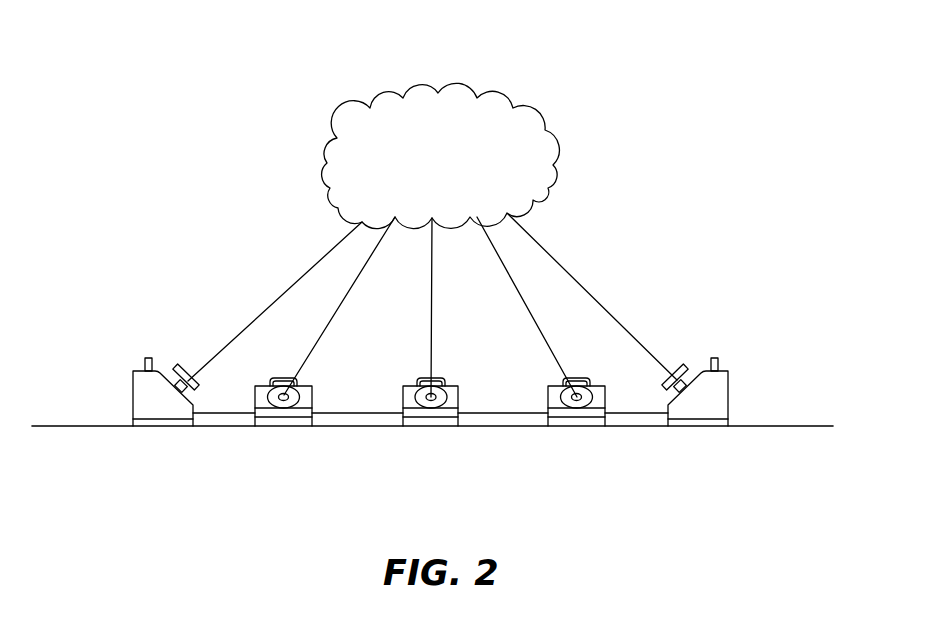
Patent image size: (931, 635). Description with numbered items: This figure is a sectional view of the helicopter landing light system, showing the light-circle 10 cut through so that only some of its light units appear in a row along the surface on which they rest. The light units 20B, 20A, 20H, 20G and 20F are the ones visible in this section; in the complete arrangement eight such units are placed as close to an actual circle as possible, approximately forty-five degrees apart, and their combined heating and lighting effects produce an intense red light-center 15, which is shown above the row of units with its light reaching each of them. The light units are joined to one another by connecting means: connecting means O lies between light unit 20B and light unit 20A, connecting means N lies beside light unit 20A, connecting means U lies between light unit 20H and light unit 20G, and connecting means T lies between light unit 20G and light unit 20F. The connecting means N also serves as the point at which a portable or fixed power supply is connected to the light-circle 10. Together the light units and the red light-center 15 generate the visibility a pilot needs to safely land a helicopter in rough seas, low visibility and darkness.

The light-circle 10 is at (235, 306).
The red light-center 15 is at (563, 89).
The light unit 20B is at (168, 377).
The light unit 20A is at (310, 385).
The light unit 20H is at (452, 388).
The light unit 20G is at (602, 388).
The light unit 20F is at (722, 383).
The connecting means N is at (327, 408).
The connecting means O is at (227, 413).
The connecting means U is at (510, 413).
The connecting means T is at (642, 413).